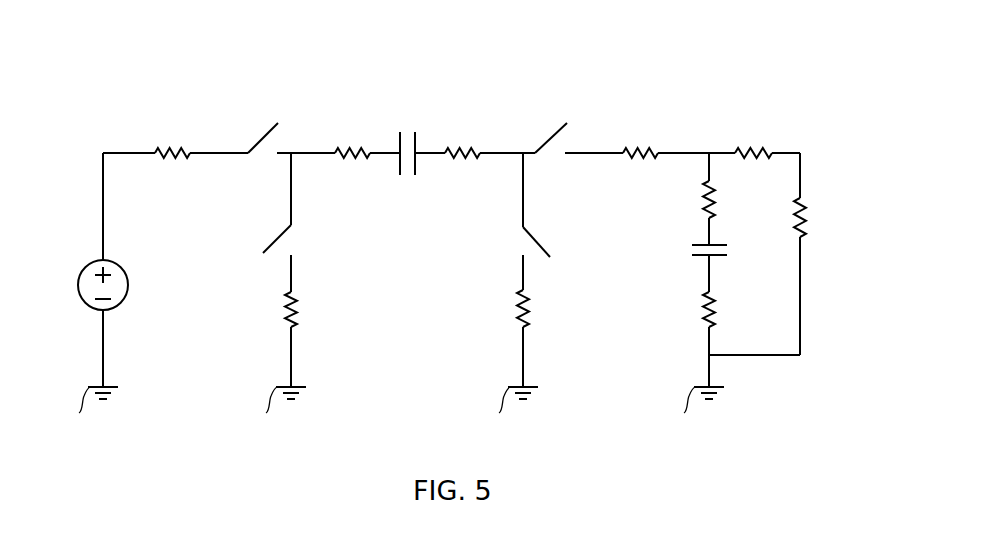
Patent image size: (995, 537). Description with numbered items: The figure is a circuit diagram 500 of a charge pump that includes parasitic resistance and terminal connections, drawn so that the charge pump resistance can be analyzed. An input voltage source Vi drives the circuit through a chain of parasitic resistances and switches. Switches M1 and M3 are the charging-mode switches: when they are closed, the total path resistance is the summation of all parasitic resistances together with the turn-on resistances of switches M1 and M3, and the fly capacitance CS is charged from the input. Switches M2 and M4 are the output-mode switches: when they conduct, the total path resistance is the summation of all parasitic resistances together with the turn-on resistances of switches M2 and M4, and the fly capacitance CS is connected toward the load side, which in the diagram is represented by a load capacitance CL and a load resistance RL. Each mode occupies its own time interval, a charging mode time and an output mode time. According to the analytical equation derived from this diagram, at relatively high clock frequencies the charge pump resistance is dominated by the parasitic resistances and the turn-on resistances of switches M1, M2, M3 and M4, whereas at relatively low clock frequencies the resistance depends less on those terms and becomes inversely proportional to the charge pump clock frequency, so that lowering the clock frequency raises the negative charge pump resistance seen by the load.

The circuit diagram 500 is at (435, 227).
The input voltage source Vi is at (88, 270).
The switch M1 is at (270, 145).
The switch M2 is at (277, 222).
The switch M3 is at (534, 221).
The switch M4 is at (557, 144).
The fly capacitance CS is at (406, 138).
The load capacitor CL is at (721, 256).
The load resistor RL is at (815, 217).